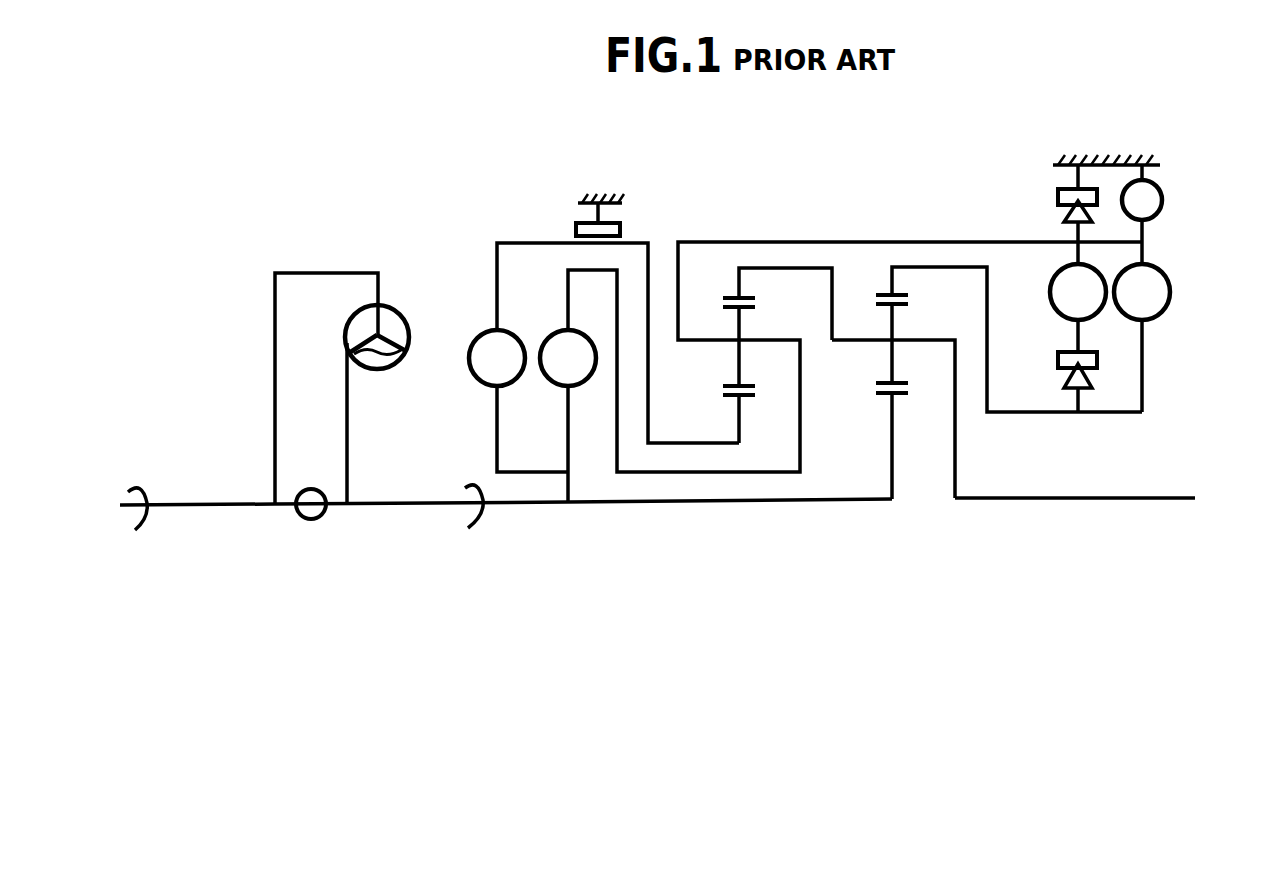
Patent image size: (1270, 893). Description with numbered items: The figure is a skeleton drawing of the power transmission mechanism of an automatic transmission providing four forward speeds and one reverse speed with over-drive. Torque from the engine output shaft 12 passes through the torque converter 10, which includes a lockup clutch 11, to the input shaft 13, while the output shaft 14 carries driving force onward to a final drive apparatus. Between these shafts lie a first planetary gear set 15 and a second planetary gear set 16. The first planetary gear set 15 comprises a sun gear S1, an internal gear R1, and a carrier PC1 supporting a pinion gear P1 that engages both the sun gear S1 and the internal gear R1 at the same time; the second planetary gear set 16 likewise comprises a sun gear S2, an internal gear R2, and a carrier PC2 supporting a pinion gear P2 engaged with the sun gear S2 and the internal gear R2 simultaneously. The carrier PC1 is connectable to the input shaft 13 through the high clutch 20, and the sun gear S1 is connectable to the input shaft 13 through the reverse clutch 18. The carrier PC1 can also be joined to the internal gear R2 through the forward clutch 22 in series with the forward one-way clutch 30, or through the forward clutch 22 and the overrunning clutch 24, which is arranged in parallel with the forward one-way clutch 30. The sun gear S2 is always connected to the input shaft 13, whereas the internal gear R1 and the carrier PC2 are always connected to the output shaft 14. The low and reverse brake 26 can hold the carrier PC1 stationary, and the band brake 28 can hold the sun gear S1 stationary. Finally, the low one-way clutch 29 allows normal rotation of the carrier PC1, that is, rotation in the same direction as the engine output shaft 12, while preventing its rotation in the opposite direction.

The torque converter 10 is at (397, 302).
The lockup clutch 11 is at (311, 520).
The engine output shaft 12 is at (212, 503).
The input shaft 13 is at (413, 505).
The output shaft 14 is at (1040, 497).
The first planetary gear set 15 is at (746, 296).
The second planetary gear set 16 is at (980, 342).
The reverse clutch 18 is at (478, 340).
The high clutch 20 is at (553, 336).
The forward clutch 22 is at (1056, 313).
The overrunning clutch 24 is at (1171, 292).
The low and reverse brake 26 is at (1163, 200).
The band brake 28 is at (612, 212).
The low one-way clutch 29 is at (1058, 195).
The forward one-way clutch 30 is at (1058, 366).
The internal gear R1 is at (745, 290).
The carrier PC1 is at (782, 339).
The pinion gear P1 is at (735, 370).
The sun gear S1 is at (740, 414).
The internal gear R2 is at (896, 290).
The carrier PC2 is at (936, 340).
The pinion gear P2 is at (890, 365).
The sun gear S2 is at (895, 463).